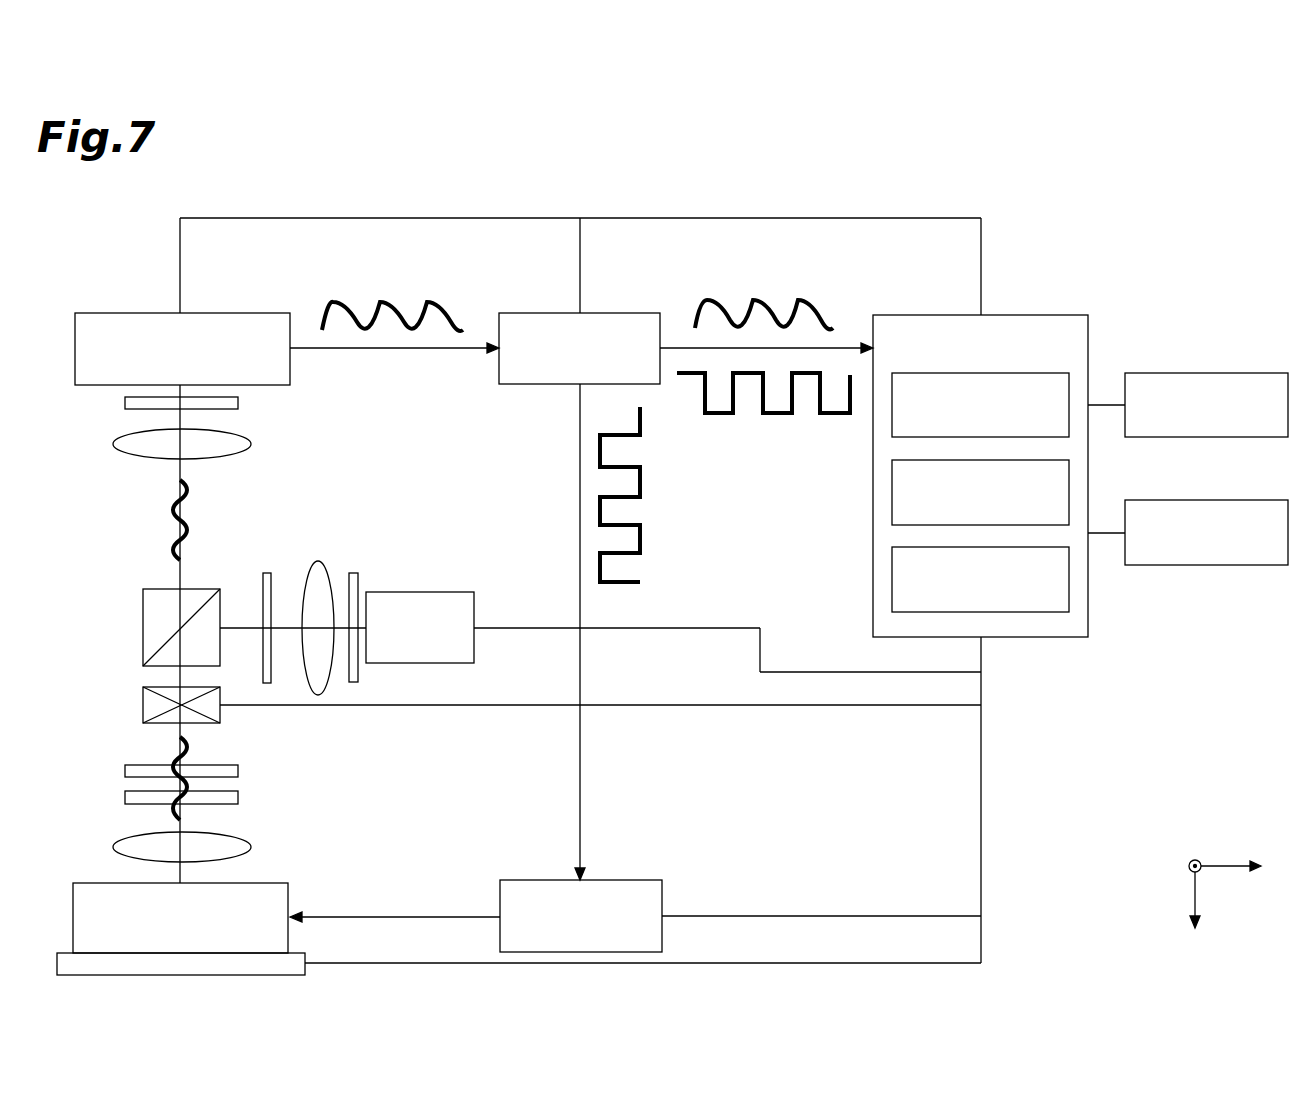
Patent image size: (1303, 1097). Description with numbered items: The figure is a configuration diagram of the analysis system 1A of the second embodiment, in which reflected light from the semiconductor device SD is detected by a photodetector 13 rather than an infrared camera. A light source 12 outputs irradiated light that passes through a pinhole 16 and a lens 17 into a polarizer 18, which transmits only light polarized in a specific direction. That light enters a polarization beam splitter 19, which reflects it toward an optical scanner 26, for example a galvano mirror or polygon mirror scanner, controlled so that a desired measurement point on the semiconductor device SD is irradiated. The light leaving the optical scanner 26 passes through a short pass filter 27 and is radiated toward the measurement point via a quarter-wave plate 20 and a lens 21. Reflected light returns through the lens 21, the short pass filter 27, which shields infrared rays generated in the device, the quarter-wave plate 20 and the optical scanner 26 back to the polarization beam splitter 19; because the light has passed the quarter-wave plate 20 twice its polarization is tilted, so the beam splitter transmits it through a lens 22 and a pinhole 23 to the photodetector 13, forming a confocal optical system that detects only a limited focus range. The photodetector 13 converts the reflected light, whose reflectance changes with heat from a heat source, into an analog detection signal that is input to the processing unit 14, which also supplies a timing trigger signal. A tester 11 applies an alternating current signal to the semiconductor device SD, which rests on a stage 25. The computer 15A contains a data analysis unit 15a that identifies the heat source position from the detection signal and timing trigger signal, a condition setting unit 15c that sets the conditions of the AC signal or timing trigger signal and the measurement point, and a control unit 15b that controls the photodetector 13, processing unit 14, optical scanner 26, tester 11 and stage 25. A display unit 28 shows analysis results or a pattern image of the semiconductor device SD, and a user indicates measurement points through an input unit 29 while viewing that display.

The analysis system 1A is at (1146, 256).
The tester 11 is at (627, 880).
The light source 12 is at (450, 592).
The photodetector 13 is at (259, 313).
The processing unit 14 is at (627, 313).
The computer 15A is at (1060, 315).
The data analysis unit 15a is at (1069, 383).
The control unit 15b is at (1069, 593).
The condition setting unit 15c is at (1069, 463).
The pinhole 16 is at (353, 573).
The lens 17 is at (318, 561).
The polarizer 18 is at (267, 573).
The polarization beam splitter 19 is at (143, 610).
The λ/4 plate 20 is at (125, 797).
The lens 21 is at (113, 847).
The lens 22 is at (115, 445).
The pinhole 23 is at (125, 403).
The stage 25 is at (57, 953).
The optical scanner 26 is at (143, 705).
The short pass filter 27 is at (125, 771).
The display unit 28 is at (1256, 373).
The input unit 29 is at (1258, 565).
The semiconductor device SD is at (258, 882).